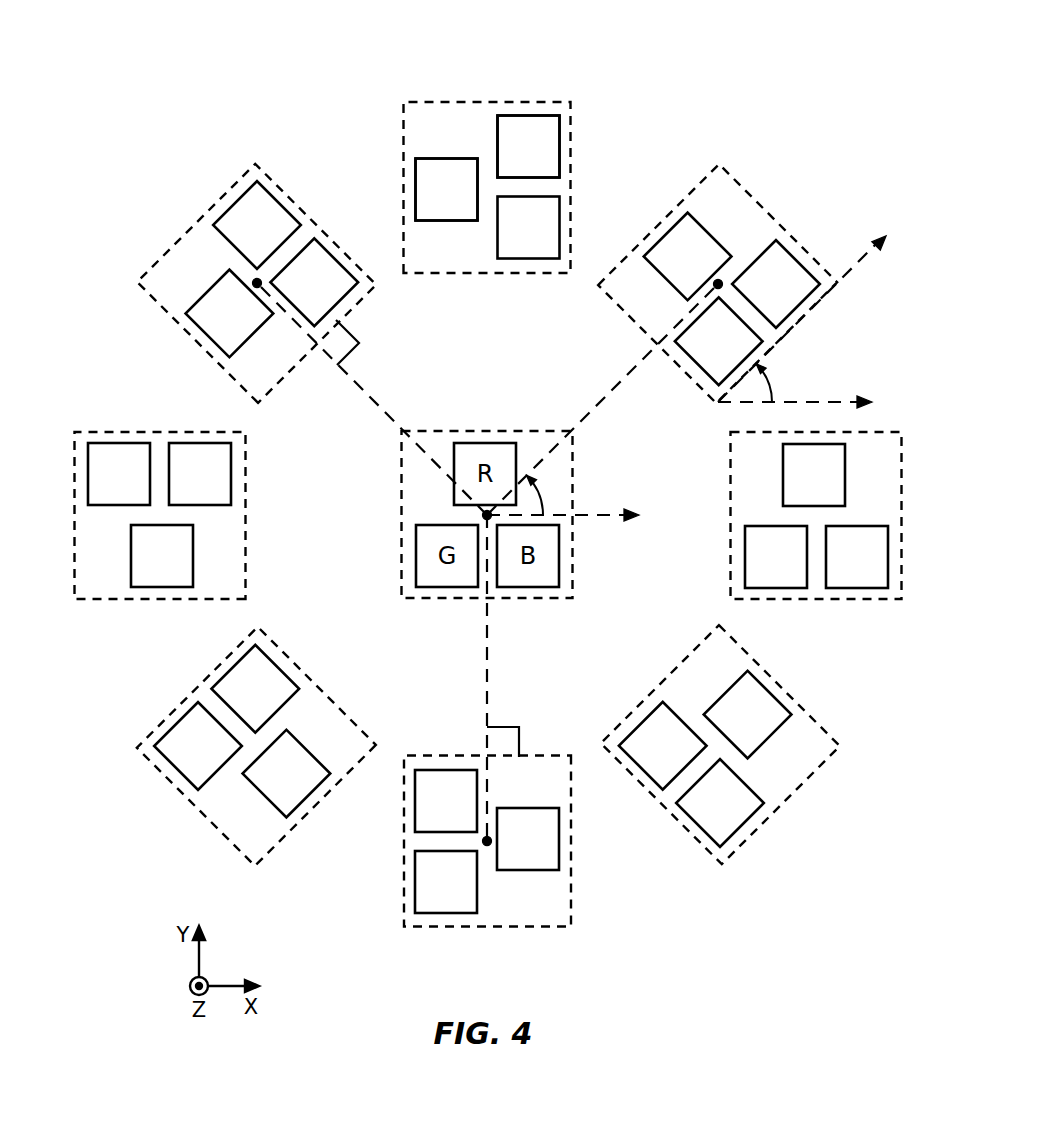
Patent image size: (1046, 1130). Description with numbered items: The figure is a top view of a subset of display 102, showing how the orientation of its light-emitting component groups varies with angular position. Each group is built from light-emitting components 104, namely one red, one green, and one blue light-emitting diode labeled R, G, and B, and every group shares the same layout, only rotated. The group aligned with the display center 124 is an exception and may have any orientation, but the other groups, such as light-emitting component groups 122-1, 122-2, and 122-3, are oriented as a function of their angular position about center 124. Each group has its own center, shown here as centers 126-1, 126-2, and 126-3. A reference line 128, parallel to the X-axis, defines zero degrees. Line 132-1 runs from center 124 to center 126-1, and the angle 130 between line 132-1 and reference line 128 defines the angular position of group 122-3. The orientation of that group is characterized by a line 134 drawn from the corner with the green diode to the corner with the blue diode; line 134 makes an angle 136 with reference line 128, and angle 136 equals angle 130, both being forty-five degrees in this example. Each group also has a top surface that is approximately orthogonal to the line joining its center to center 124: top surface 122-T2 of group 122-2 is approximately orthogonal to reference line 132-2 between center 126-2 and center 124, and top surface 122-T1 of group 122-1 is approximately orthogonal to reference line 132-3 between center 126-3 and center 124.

The display 102 is at (665, 79).
The light-emitting component 104 is at (446, 156).
The light-emitting component group 122-1 is at (402, 860).
The light-emitting component group 122-2 is at (290, 198).
The light-emitting component group 122-3 is at (800, 247).
The top surface 122-T1 is at (422, 757).
The top surface 122-T2 is at (363, 297).
The center 124 is at (487, 515).
The center 126-1 is at (718, 284).
The center 126-2 is at (257, 283).
The center 126-3 is at (487, 841).
The reference line 128 is at (598, 516).
The angle 130 is at (540, 495).
The line 132-1 is at (622, 380).
The reference line 132-2 is at (395, 423).
The reference line 132-3 is at (487, 647).
The line 134 is at (867, 260).
The angle 136 is at (772, 380).